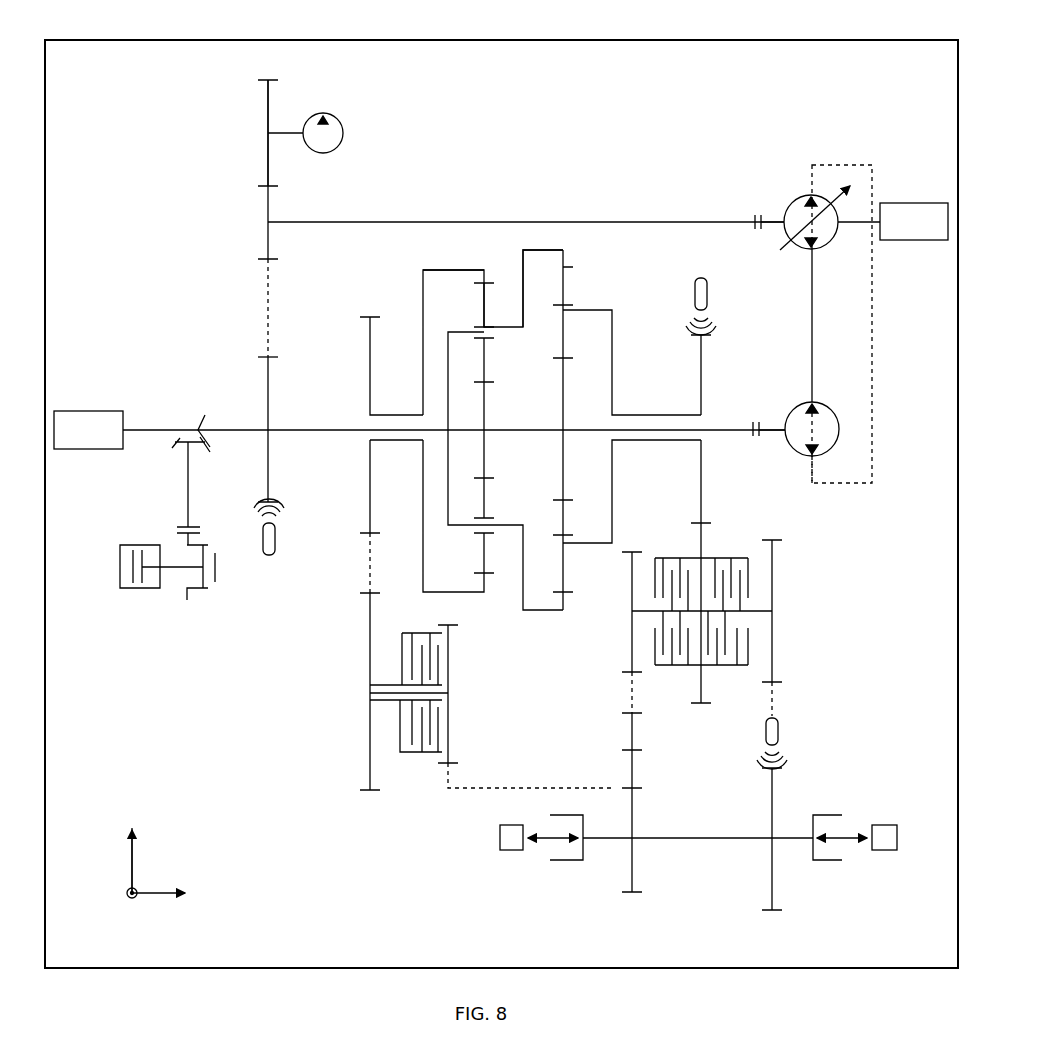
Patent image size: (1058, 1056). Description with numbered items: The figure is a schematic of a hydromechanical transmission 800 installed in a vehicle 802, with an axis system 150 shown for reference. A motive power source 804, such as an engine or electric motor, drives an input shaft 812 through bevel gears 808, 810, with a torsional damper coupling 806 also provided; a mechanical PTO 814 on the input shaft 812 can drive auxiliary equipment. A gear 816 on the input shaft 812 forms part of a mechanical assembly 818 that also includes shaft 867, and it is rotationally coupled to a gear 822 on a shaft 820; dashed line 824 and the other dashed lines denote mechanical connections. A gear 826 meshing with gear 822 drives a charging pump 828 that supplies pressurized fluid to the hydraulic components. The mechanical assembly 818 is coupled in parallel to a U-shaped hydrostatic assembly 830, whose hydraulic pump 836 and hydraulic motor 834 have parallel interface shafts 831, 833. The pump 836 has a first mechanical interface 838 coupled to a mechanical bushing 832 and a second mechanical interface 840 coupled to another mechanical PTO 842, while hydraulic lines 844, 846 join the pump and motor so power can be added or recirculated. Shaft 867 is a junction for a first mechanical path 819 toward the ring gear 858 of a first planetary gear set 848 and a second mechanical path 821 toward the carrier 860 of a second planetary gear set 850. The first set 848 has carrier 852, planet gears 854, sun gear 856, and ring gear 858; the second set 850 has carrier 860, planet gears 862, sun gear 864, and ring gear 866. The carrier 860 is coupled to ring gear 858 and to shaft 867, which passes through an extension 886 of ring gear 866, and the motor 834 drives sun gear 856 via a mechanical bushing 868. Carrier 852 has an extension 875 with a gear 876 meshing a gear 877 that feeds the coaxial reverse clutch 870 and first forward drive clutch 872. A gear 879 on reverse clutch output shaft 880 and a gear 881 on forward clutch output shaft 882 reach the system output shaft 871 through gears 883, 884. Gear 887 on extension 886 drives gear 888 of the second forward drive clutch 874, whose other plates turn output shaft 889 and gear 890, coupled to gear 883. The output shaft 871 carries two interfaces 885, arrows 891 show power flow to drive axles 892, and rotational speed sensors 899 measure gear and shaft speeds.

The transmission 800 is at (905, 92).
The vehicle 802 is at (48, 42).
The motive power source 804 is at (192, 640).
The torsional damper coupling 806 is at (186, 527).
The gear 808 is at (178, 444).
The gear 810 is at (208, 412).
The input shaft 812 is at (243, 426).
The mechanical PTO 814 is at (60, 412).
The gear 816 is at (274, 398).
The mechanical assembly 818 is at (208, 290).
The first mechanical path 819 is at (328, 372).
The shaft 820 is at (333, 222).
The second mechanical path 821 is at (343, 447).
The gear 822 is at (262, 205).
The dashed line 824 is at (265, 316).
The gear 826 is at (278, 90).
The charging pump 828 is at (345, 133).
The hydrostatic assembly 830 is at (896, 172).
The mechanical interface shaft 831 is at (779, 212).
The mechanical bushing 832 is at (757, 210).
The mechanical interface shaft 833 is at (772, 436).
The hydraulic motor 834 is at (805, 406).
The hydraulic pump 836 is at (808, 198).
The first mechanical interface 838 is at (780, 230).
The second mechanical interface 840 is at (841, 234).
The mechanical PTO 842 is at (890, 240).
The hydraulic line 844 is at (852, 164).
The hydraulic line 846 is at (811, 330).
The first planetary gear set 848 is at (596, 262).
The second planetary gear set 850 is at (403, 262).
The carrier 852 is at (598, 312).
The planet gears 854 is at (556, 269).
The sun gear 856 is at (558, 420).
The ring gear 858 is at (550, 250).
The carrier 860 is at (478, 332).
The planet gears 862 is at (480, 292).
The sun gear 864 is at (488, 420).
The ring gear 866 is at (480, 268).
The shaft 867 is at (343, 421).
The mechanical bushing 868 is at (755, 416).
The reverse clutch 870 is at (660, 546).
The output shaft 871 is at (666, 838).
The first forward drive clutch 872 is at (731, 544).
The second forward drive clutch 874 is at (404, 622).
The extension 875 is at (628, 415).
The gear 876 is at (698, 372).
The gear 877 is at (700, 542).
The gear 879 is at (628, 660).
The output shaft 880 is at (640, 615).
The gear 881 is at (776, 672).
The output shaft 882 is at (763, 615).
The gear 883 is at (633, 796).
The gear 884 is at (770, 804).
The interfaces 885 is at (566, 875).
The extension 886 is at (388, 416).
The gear 887 is at (371, 314).
The gear 888 is at (368, 642).
The output shaft 889 is at (366, 691).
The gear 890 is at (453, 766).
The arrows 891 is at (565, 846).
The drive axles 892 is at (498, 838).
The rotational speed sensors 899 is at (262, 550).
The axis system 150 is at (196, 836).